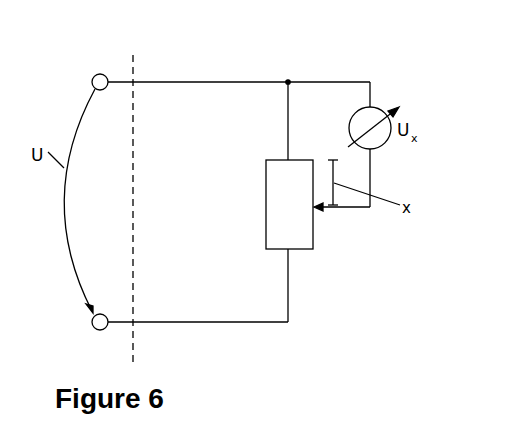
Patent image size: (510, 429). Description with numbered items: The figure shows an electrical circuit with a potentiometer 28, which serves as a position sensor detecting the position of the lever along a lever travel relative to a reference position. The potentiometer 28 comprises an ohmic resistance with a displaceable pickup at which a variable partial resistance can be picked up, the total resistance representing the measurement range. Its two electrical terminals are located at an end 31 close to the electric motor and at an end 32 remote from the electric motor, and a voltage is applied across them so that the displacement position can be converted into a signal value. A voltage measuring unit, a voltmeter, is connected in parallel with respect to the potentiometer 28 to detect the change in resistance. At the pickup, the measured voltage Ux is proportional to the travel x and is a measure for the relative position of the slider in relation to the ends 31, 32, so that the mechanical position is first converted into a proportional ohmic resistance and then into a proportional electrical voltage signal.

The end close to the electric motor 31 is at (95, 77).
The end remote from the electric motor 32 is at (94, 327).
The potentiometer 28 is at (316, 238).